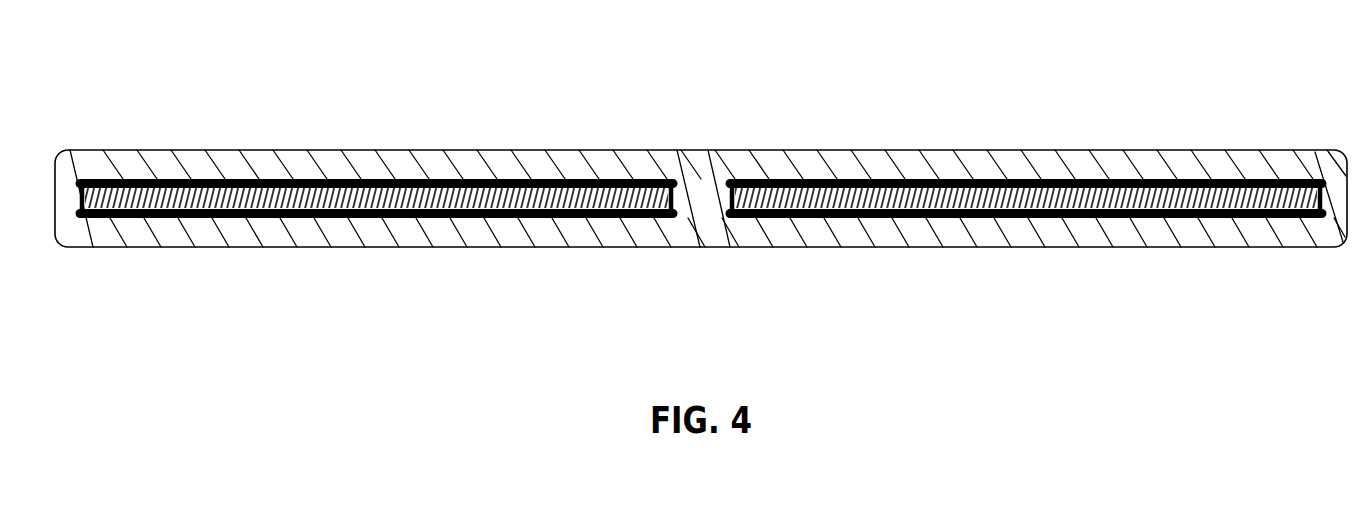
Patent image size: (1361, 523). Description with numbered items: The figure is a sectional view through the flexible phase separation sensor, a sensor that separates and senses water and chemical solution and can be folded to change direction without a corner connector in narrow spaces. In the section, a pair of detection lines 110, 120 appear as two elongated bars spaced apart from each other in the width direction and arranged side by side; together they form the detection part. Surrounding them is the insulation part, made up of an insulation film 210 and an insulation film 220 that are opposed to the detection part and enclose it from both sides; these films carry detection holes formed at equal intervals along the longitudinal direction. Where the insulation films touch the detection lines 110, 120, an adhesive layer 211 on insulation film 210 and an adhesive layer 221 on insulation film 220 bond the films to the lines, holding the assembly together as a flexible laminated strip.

The detection line 110 is at (877, 188).
The detection line 120 is at (383, 188).
The insulation film 210 is at (205, 170).
The adhesive layer 211 is at (497, 186).
The insulation film 220 is at (207, 232).
The adhesive layer 221 is at (430, 225).